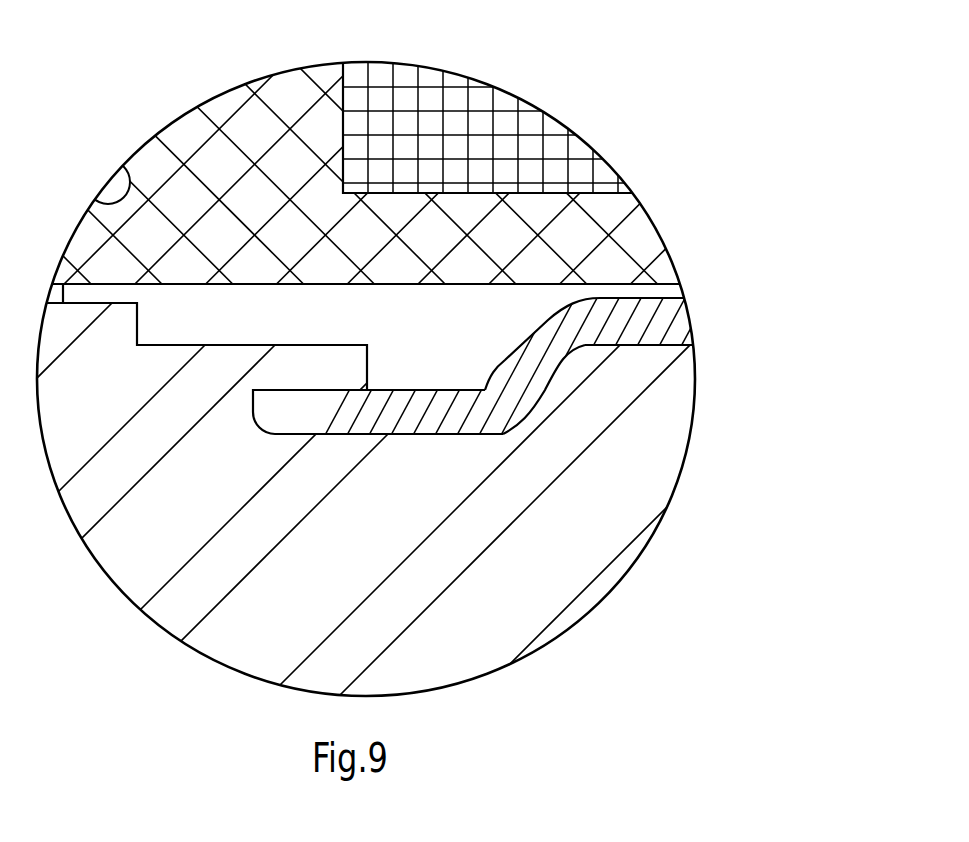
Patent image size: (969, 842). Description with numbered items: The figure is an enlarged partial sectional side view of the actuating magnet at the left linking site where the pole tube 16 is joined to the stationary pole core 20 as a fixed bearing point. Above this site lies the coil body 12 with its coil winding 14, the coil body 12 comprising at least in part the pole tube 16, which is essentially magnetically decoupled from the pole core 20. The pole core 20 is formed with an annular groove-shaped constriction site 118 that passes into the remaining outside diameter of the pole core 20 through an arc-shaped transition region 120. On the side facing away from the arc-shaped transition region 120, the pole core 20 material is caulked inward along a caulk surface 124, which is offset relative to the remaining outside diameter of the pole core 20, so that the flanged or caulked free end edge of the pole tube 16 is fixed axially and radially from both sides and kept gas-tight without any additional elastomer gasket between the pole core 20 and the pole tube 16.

The coil body 12 is at (625, 233).
The coil winding 14 is at (500, 148).
The pole tube 16 is at (668, 314).
The pole core 20 is at (640, 470).
The annular groove-shaped constriction site 118 is at (413, 435).
The arc-shaped transition region 120 is at (560, 363).
The caulk surface 124 is at (207, 392).